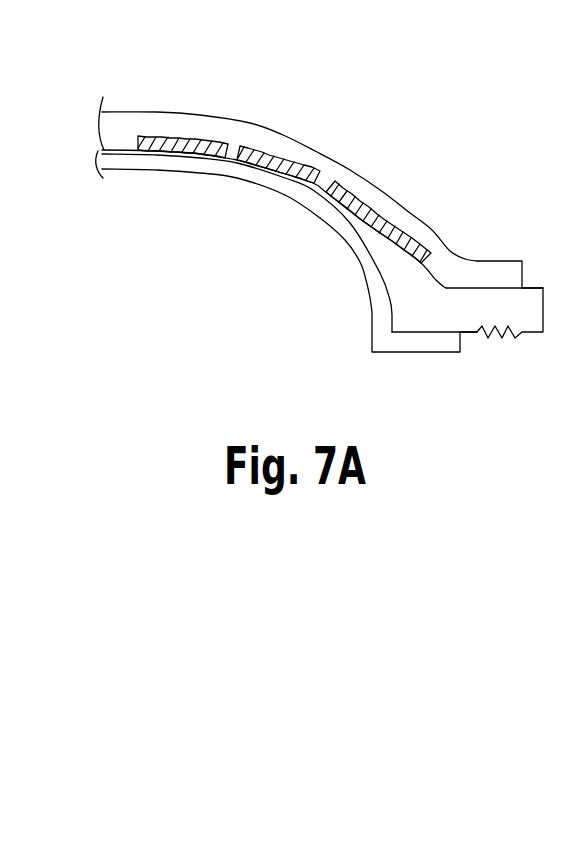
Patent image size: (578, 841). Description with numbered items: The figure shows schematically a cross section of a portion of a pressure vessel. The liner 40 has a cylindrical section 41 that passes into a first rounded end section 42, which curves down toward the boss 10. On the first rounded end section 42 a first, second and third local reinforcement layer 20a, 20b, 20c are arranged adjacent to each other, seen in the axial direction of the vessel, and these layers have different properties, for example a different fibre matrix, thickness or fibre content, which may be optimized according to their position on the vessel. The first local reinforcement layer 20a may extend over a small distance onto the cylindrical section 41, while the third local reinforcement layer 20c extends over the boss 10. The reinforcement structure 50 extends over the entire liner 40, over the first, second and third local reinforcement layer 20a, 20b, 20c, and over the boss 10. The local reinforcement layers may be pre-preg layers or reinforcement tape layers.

The boss 10 is at (463, 308).
The first local reinforcement layer 20a is at (200, 147).
The second local reinforcement layer 20b is at (276, 162).
The third local reinforcement layer 20c is at (393, 228).
The liner 40 is at (187, 190).
The cylindrical section 41 is at (123, 158).
The first rounded end section 42 is at (325, 207).
The reinforcement structure 50 is at (148, 124).